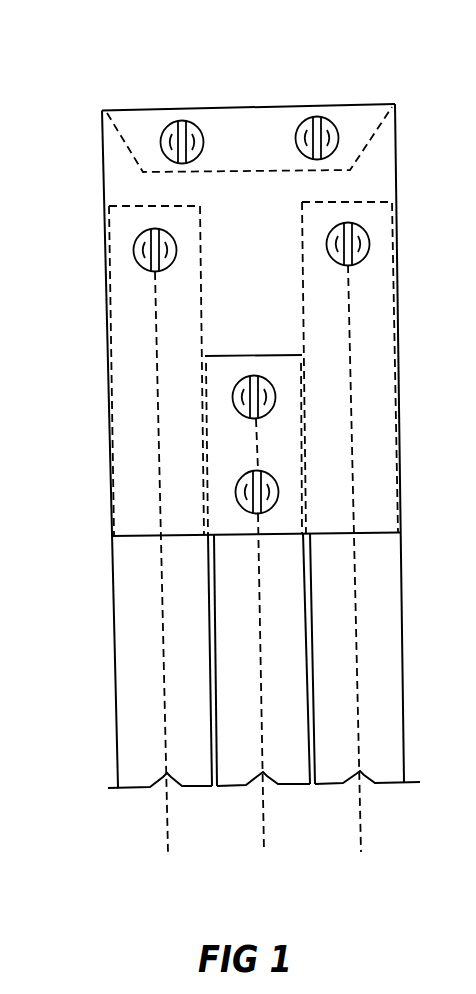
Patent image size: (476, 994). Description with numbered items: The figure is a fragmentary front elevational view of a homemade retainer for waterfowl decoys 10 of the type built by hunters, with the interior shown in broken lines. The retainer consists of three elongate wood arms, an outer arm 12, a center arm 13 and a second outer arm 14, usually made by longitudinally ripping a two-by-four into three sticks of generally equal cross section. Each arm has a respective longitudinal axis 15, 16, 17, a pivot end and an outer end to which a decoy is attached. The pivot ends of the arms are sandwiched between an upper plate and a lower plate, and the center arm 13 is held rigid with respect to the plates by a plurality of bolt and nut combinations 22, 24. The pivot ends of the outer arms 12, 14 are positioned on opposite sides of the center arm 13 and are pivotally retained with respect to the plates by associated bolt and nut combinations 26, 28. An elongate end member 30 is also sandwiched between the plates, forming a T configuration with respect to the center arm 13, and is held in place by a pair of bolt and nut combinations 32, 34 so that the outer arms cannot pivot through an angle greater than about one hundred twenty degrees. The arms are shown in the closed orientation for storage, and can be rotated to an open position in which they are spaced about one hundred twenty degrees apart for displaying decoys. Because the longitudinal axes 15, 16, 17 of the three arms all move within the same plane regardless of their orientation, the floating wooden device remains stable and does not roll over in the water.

The retainer for waterfowl decoys 10 is at (219, 410).
The outer arm 12 is at (115, 662).
The center arm 13 is at (228, 787).
The outer arm 14 is at (329, 786).
The longitudinal axis 15 is at (158, 608).
The longitudinal axis 16 is at (258, 580).
The longitudinal axis 17 is at (355, 575).
The bolt and nut combination 22 is at (233, 397).
The bolt and nut combination 24 is at (236, 492).
The bolt and nut combination 26 is at (134, 251).
The bolt and nut combination 28 is at (369, 243).
The elongate end member 30 is at (243, 135).
The bolt and nut combination 32 is at (188, 121).
The bolt and nut combination 34 is at (321, 117).